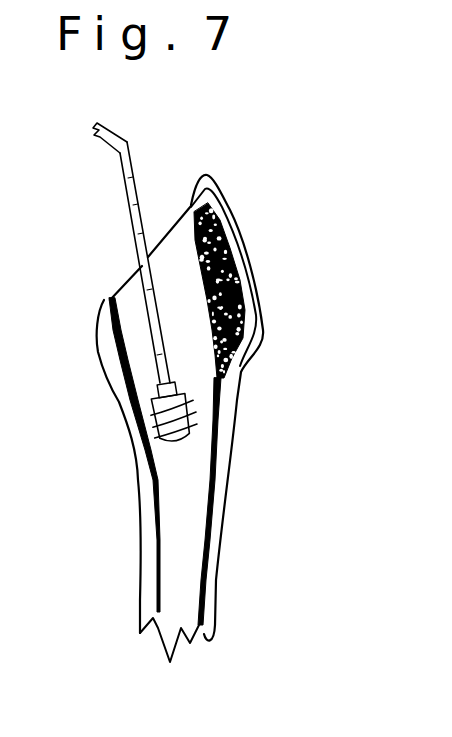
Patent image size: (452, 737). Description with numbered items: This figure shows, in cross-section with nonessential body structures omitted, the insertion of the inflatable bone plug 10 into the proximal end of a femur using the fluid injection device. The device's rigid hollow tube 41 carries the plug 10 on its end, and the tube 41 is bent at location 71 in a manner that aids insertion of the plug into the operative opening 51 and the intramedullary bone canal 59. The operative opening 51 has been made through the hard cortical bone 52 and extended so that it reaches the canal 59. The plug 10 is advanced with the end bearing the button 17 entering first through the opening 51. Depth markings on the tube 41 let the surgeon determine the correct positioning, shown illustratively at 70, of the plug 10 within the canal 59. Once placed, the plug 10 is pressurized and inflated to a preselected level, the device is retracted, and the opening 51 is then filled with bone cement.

The inflatable bone plug 10 is at (214, 413).
The button 17 is at (180, 445).
The tube 41 is at (131, 215).
The operative opening 51 is at (178, 487).
The hard cortical bone 52 is at (148, 571).
The intramedullary bone canal 59 is at (185, 612).
The correct positioning 70 is at (177, 578).
The bend location 71 is at (126, 138).